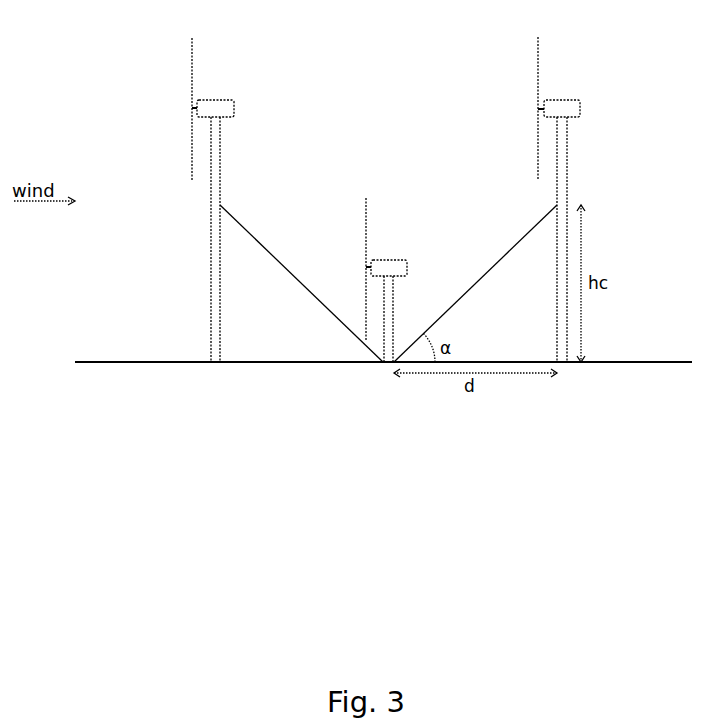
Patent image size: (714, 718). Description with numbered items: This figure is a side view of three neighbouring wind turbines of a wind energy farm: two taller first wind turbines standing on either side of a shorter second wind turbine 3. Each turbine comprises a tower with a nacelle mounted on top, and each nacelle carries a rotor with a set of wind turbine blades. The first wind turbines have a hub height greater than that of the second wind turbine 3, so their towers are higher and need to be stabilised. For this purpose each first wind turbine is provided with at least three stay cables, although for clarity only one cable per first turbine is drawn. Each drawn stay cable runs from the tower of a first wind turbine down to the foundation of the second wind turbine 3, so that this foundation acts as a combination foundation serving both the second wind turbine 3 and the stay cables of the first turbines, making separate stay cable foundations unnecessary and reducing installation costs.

The second wind turbine 3 is at (415, 240).